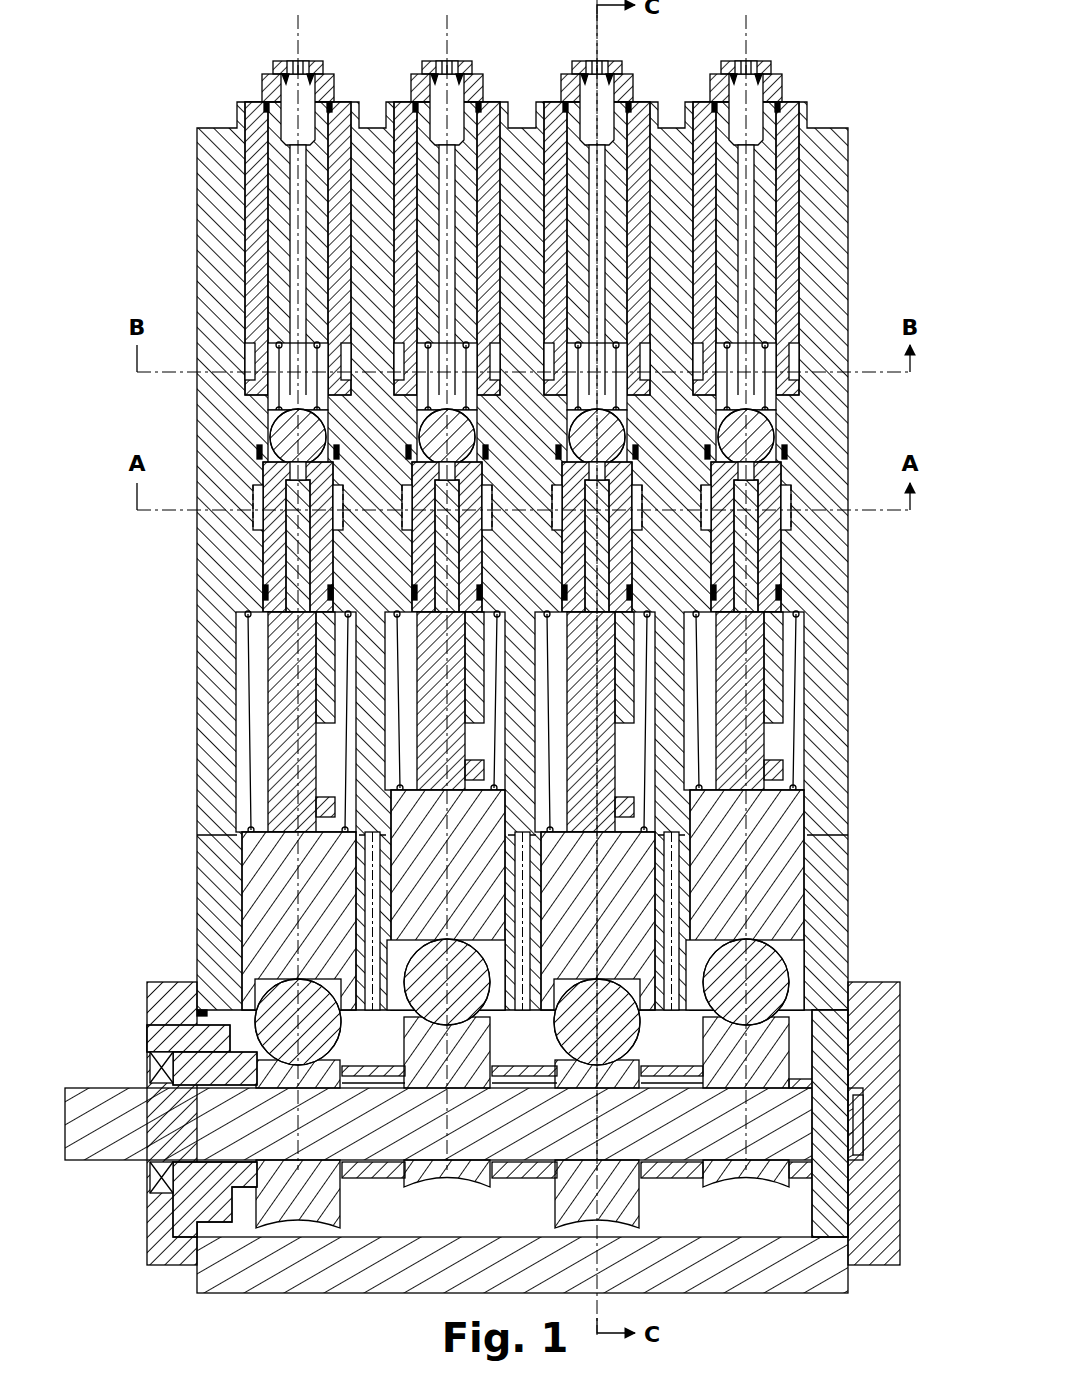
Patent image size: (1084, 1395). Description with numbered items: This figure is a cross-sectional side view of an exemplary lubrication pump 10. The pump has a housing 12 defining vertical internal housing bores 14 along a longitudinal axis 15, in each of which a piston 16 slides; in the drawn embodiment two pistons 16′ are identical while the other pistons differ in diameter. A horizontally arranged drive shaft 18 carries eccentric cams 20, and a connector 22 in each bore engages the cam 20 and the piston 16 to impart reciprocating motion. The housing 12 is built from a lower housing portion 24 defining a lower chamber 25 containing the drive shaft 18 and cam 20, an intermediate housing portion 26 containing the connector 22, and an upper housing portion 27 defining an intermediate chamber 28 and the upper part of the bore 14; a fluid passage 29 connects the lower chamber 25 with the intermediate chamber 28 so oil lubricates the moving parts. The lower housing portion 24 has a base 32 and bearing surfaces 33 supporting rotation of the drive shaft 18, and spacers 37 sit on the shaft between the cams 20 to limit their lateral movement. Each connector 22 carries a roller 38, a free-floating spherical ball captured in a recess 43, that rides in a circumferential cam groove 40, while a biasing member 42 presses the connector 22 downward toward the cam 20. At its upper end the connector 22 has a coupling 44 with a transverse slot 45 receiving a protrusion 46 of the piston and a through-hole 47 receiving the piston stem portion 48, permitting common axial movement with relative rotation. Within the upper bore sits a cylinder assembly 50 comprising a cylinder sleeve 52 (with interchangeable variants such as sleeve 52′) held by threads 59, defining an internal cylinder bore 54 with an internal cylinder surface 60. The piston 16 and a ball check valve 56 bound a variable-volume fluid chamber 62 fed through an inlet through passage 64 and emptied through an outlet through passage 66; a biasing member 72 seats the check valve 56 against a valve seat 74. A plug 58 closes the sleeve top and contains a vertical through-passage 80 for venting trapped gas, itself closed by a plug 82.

The lubrication pump 10 is at (150, 38).
The housing 12 is at (830, 190).
The internal housing bore 14 is at (262, 560).
The longitudinal axis 15 is at (300, 18).
The piston 16 is at (290, 650).
The piston 16′ is at (450, 645).
The drive shaft 18 is at (85, 1130).
The eccentric cam 20 is at (270, 1200).
The connector 22 is at (760, 855).
The lower housing portion 24 is at (870, 1025).
The lower chamber 25 is at (438, 1222).
The intermediate housing portion 26 is at (820, 915).
The upper housing portion 27 is at (818, 440).
The intermediate chamber 28 is at (659, 688).
The fluid passage 29 is at (666, 835).
The base 32 is at (790, 1260).
The bearing surface 33 is at (152, 1165).
The spacer 37 is at (700, 1175).
The roller 38 is at (290, 1000).
The cam groove 40 is at (245, 1065).
The biasing member 42 is at (347, 690).
The recess 43 is at (240, 1035).
The coupling 44 is at (325, 785).
The transverse slot 45 is at (230, 832).
The protrusion 46 is at (300, 825).
The through-hole 47 is at (268, 777).
The stem portion 48 is at (316, 800).
The cylinder assembly 50 is at (240, 100).
The cylinder sleeve 52 is at (275, 690).
The cylinder sleeve 52′ is at (475, 690).
The internal cylinder bore 54 is at (268, 725).
The check valve 56 is at (285, 420).
The plug 58 is at (285, 218).
The threads 59 is at (246, 140).
The internal cylinder surface 60 is at (298, 490).
The fluid chamber 62 is at (300, 500).
The inlet through passage 64 is at (260, 510).
The outlet through passage 66 is at (265, 372).
The biasing member 72 is at (268, 385).
The valve seat 74 is at (290, 437).
The through-passage 80 is at (300, 190).
The plug 82 is at (312, 70).